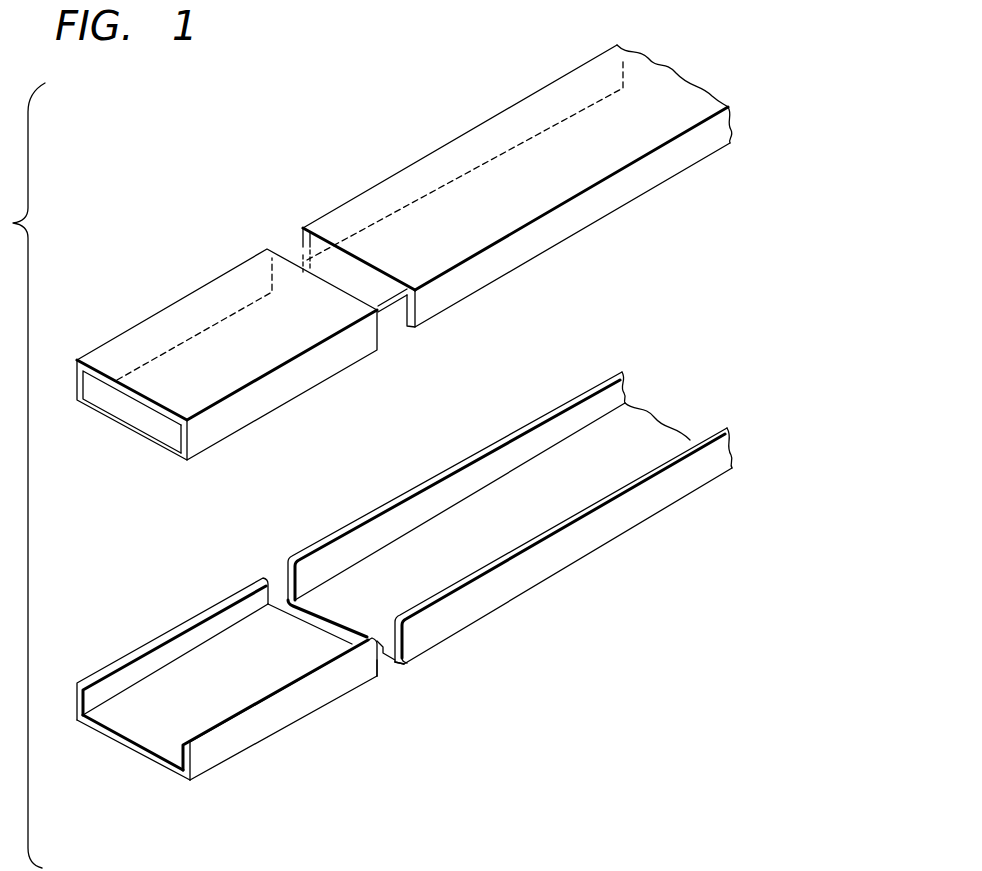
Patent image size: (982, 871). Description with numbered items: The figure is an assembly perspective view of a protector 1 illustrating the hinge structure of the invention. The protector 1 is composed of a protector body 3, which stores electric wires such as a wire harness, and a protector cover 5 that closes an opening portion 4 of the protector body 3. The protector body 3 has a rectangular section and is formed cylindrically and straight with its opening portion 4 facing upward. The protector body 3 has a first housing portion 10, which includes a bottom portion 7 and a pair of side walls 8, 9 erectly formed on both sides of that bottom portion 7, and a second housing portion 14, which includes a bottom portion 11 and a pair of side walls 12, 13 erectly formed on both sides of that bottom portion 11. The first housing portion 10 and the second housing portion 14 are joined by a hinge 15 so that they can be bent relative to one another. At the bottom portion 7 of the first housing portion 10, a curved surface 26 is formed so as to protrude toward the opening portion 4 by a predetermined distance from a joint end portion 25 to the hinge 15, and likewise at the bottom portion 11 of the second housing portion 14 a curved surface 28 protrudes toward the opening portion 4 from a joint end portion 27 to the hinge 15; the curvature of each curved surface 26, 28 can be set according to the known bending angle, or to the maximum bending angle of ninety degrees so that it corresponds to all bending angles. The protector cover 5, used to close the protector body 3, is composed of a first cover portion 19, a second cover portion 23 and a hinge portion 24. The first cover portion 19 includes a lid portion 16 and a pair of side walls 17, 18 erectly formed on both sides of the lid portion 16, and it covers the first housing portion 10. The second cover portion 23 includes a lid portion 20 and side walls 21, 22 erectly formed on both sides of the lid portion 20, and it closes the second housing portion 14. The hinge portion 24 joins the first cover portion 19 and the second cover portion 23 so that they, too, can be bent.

The protector 1 is at (778, 198).
The protector body 3 is at (696, 342).
The opening portion 4 is at (642, 441).
The protector cover 5 is at (678, 197).
The bottom portion 7 is at (507, 523).
The side wall 8 is at (617, 523).
The side wall 9 is at (503, 462).
The first housing portion 10 is at (687, 520).
The bottom portion 11 is at (224, 690).
The side wall 12 is at (315, 698).
The side wall 13 is at (218, 626).
The second housing portion 14 is at (225, 792).
The hinge 15 is at (325, 626).
The lid portion 16 is at (556, 150).
The side wall 17 is at (568, 226).
The side wall 18 is at (425, 180).
The first cover portion 19 is at (668, 48).
The lid portion 20 is at (260, 317).
The side wall 21 is at (298, 382).
The side wall 22 is at (76, 375).
The second cover portion 23 is at (168, 288).
The hinge portion 24 is at (342, 272).
The joint end portion 25 is at (402, 664).
The curved surface 26 is at (422, 660).
The joint end portion 27 is at (395, 672).
The curved surface 28 is at (371, 690).